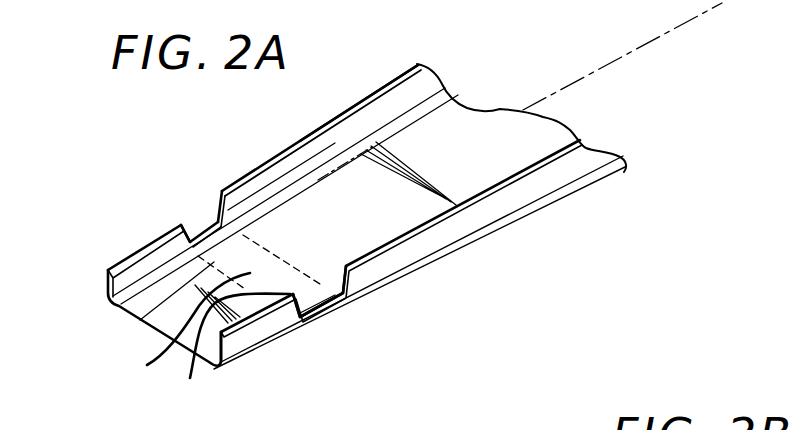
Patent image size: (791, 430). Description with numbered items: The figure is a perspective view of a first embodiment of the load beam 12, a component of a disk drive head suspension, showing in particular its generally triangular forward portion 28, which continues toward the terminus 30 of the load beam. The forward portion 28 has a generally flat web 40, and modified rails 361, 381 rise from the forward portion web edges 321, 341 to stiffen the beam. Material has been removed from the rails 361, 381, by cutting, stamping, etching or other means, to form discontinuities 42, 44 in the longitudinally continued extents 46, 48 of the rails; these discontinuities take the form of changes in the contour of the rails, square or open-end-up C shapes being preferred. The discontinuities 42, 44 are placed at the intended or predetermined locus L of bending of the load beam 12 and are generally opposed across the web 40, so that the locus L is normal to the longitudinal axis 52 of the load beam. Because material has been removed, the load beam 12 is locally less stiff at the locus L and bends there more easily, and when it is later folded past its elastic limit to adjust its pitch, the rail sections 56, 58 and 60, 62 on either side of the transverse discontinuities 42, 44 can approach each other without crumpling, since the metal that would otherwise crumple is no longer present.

The load beam 12 is at (557, 121).
The forward portion 28 is at (355, 190).
The terminus 30 is at (133, 329).
The web 40 is at (342, 243).
The discontinuity 42 is at (207, 216).
The discontinuity 44 is at (330, 286).
The longitudinally continued extent 46 is at (147, 278).
The longitudinally continued extent 48 is at (263, 333).
The longitudinal axis 52 is at (671, 33).
The rail section 56 is at (178, 246).
The rail section 58 is at (258, 194).
The rail section 60 is at (218, 341).
The rail section 62 is at (370, 262).
The web edge 321 is at (120, 290).
The web edge 341 is at (229, 352).
The rail 361 is at (416, 64).
The rail 381 is at (578, 170).
The locus L is at (173, 323).